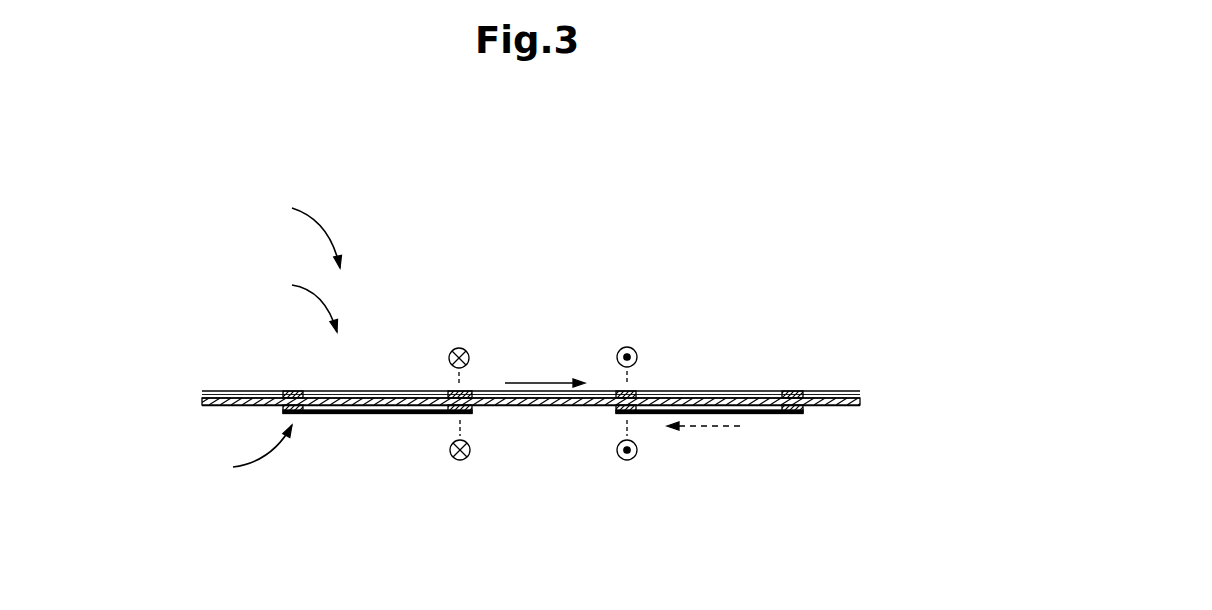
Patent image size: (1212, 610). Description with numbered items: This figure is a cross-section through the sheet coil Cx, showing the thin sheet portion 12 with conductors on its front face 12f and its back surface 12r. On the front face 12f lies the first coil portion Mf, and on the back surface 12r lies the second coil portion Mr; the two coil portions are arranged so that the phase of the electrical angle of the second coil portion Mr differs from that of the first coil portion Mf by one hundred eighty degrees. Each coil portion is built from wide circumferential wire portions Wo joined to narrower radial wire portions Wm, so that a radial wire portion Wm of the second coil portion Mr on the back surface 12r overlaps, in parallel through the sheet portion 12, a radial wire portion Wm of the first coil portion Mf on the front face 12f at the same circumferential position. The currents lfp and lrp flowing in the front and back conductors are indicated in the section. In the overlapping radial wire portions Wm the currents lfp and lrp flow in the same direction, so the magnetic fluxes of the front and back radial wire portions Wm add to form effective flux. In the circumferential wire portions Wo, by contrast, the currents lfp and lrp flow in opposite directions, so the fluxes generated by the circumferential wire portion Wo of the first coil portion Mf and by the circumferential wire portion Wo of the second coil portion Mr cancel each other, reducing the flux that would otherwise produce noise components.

The circumferential wire portion Wo is at (236, 391).
The radial wire portion Wm is at (443, 391).
The sheet portion 12 is at (573, 417).
The front face 12f is at (773, 391).
The back surface 12r is at (545, 407).
The first coil portion Mf is at (294, 227).
The second coil portion Mr is at (242, 452).
The sheet coil Cx is at (285, 298).
The current lfp is at (535, 382).
The current lrp is at (455, 460).